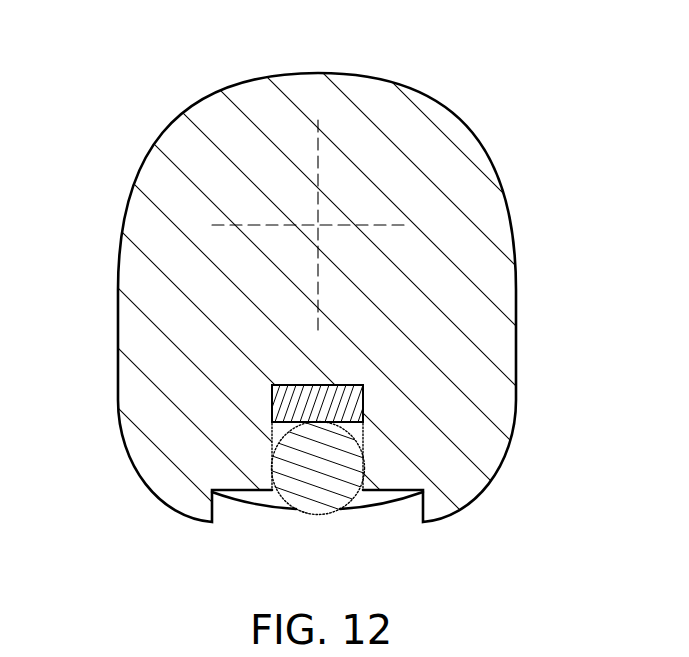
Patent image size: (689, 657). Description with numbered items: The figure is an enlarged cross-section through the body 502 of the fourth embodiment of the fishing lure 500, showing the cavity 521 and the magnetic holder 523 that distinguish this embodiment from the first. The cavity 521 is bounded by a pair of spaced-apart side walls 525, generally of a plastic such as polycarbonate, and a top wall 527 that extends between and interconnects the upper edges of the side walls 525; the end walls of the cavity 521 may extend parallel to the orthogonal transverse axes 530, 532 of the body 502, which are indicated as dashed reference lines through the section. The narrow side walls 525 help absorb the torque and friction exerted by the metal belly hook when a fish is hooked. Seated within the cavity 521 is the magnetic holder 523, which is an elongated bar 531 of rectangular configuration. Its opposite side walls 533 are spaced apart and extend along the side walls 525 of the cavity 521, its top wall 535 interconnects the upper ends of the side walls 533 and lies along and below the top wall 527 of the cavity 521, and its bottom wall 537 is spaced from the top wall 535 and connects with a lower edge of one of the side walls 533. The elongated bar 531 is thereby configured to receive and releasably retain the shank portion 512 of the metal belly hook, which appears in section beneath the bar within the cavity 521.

The fishing lure 500 is at (344, 328).
The body 502 is at (141, 153).
The shank portion 512 is at (313, 517).
The cavity 521 is at (243, 513).
The magnetic holder 523 is at (272, 397).
The side walls 525 is at (272, 422).
The top wall 527 is at (366, 390).
The transverse axis 530 is at (373, 222).
The elongated bar 531 is at (279, 397).
The transverse axis 532 is at (322, 182).
The opposite side walls 533 is at (272, 410).
The top wall 535 is at (335, 386).
The bottom wall 537 is at (338, 426).